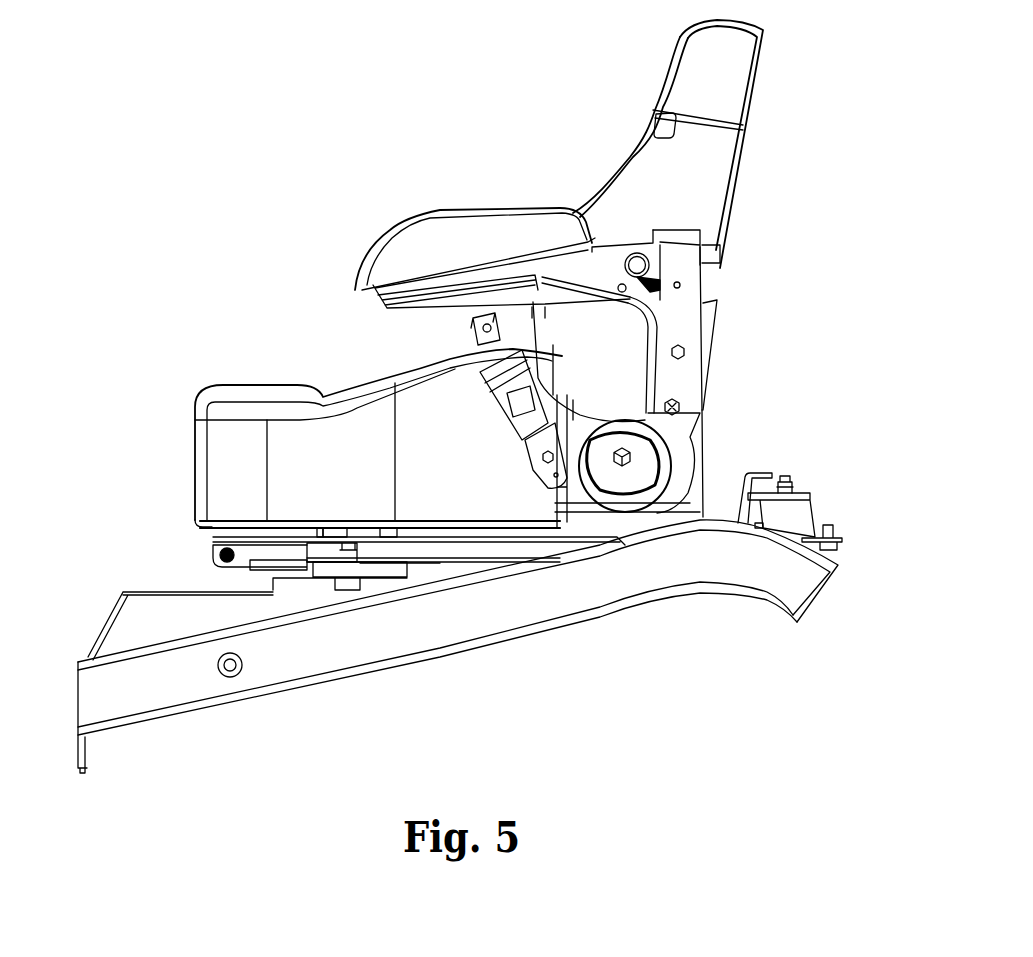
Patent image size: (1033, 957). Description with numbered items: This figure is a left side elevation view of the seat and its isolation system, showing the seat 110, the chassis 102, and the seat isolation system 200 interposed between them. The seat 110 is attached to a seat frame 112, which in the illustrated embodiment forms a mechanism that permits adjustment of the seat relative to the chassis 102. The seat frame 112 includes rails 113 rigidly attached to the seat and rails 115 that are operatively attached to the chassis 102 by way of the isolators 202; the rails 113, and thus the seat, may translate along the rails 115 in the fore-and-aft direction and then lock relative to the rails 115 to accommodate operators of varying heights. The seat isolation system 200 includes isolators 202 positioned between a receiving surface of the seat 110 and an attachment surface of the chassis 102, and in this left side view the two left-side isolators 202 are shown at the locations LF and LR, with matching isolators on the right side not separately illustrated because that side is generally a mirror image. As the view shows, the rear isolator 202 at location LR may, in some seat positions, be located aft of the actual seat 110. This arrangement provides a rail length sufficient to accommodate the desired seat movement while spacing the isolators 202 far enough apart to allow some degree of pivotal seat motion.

The seat 110 is at (479, 274).
The seat frame 112 is at (190, 542).
The rails 113 is at (380, 533).
The rails 115 is at (350, 550).
The seat isolation system 200 is at (170, 573).
The chassis 102 is at (245, 592).
The isolators 202 is at (330, 533).
The left front isolator location LF is at (343, 533).
The left rear isolator location LR is at (800, 480).